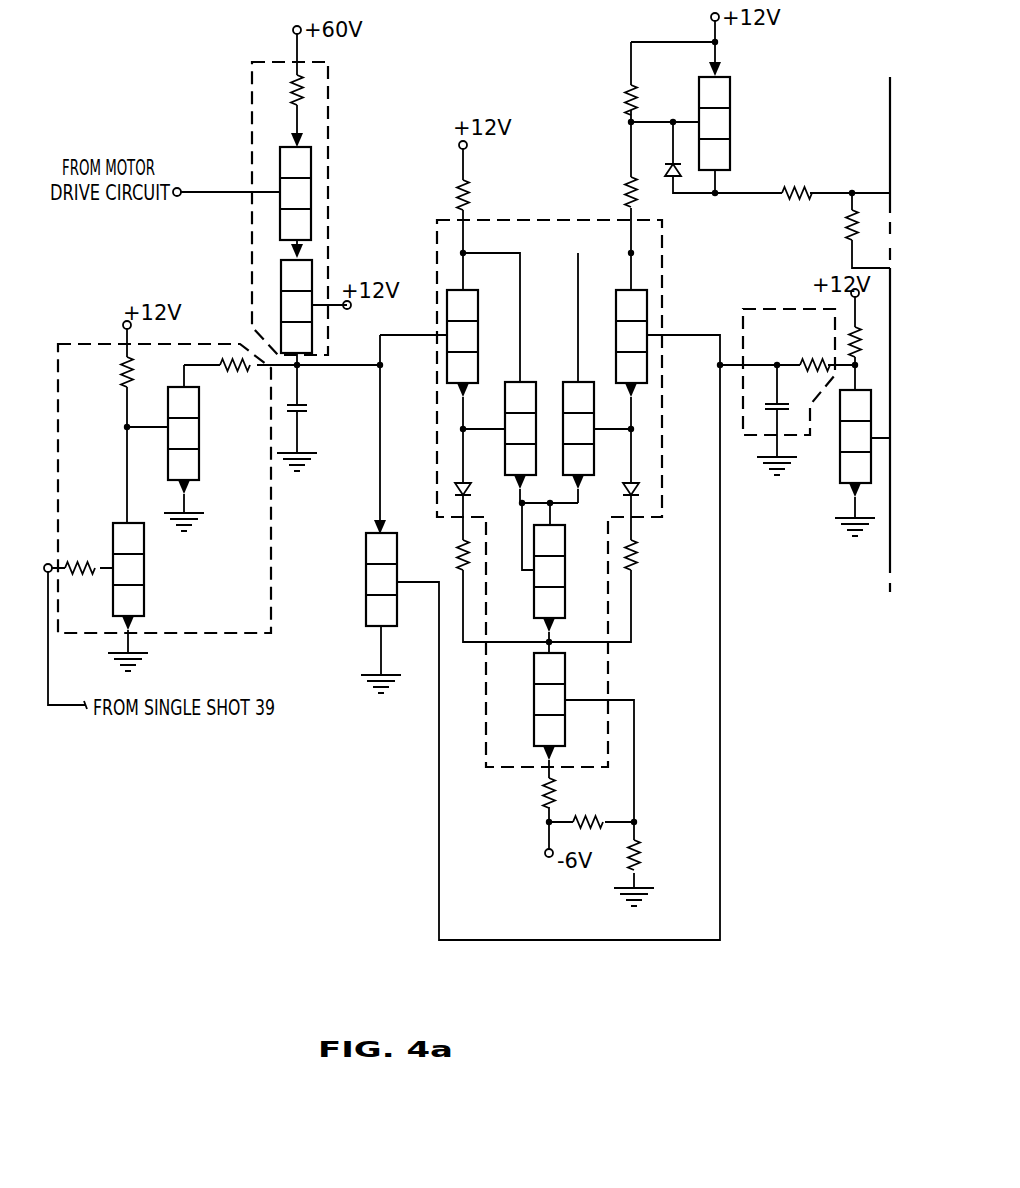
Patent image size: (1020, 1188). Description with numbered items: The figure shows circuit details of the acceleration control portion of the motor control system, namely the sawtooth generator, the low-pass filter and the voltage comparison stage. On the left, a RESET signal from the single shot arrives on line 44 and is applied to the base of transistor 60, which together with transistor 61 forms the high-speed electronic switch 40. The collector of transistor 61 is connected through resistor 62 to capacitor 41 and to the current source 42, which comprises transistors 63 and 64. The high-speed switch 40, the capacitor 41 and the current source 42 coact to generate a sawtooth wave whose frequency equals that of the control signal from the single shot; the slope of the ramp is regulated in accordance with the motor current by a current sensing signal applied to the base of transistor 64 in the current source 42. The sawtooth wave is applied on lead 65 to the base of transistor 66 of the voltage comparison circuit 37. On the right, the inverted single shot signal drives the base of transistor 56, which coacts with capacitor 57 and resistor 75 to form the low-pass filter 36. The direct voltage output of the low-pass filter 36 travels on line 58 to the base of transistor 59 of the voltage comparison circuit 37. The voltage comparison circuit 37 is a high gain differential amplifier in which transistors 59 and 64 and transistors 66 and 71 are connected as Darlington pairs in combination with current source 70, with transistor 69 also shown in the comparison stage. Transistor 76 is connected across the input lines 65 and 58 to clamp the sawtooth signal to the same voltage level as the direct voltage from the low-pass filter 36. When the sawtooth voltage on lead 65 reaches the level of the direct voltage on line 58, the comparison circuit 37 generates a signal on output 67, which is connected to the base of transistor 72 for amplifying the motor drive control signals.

The low-pass filter 36 is at (763, 308).
The voltage comparison circuit 37 is at (661, 293).
The high-speed electronic switch 40 is at (272, 538).
The capacitor 41 is at (303, 412).
The current source 42 is at (331, 103).
The line 44 is at (46, 565).
The transistor 56 is at (843, 456).
The capacitor 57 is at (782, 404).
The line 58 is at (696, 336).
The transistor 59 is at (616, 319).
The transistor 60 is at (144, 588).
The transistor 61 is at (195, 458).
The resistor 62 is at (252, 376).
The transistor 63 is at (281, 266).
The transistor 64 is at (281, 152).
The lead 65 is at (400, 336).
The transistor 66 is at (476, 333).
The output 67 is at (630, 158).
The transistor 69 is at (540, 602).
The current source 70 is at (536, 707).
The transistor 71 is at (506, 448).
The transistor 72 is at (731, 98).
The resistor 75 is at (806, 363).
The transistor 76 is at (373, 555).